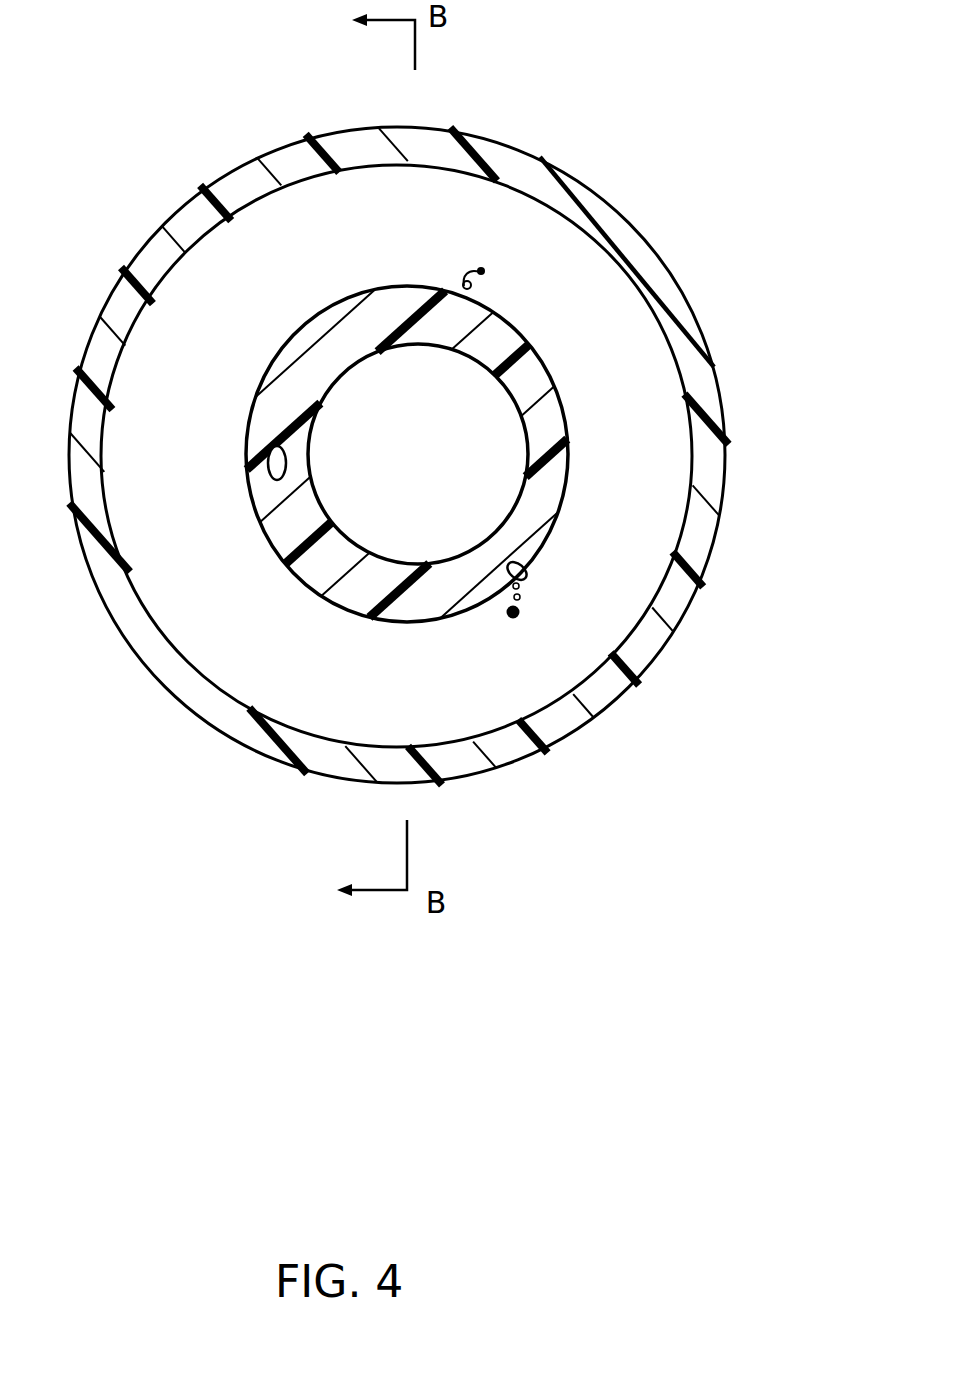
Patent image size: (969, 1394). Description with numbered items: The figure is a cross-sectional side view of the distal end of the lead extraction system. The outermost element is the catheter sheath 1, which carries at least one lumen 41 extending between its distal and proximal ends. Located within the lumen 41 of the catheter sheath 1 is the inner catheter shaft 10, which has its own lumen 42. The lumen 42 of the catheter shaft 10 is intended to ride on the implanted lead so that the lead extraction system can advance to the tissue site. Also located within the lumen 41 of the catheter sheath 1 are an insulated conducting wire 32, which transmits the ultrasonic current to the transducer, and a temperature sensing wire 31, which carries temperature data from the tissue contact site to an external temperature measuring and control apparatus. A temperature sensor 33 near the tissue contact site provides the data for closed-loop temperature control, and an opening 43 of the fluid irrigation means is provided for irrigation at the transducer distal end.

The catheter sheath 1 is at (610, 193).
The lumen of the catheter sheath 41 is at (627, 327).
The catheter shaft 10 is at (570, 458).
The lumen of the catheter shaft 42 is at (360, 528).
The opening of the fluid irrigation means 43 is at (265, 468).
The insulated conducting wire 32 is at (490, 250).
The temperature sensor 33 is at (527, 575).
The temperature sensing wire 31 is at (520, 607).